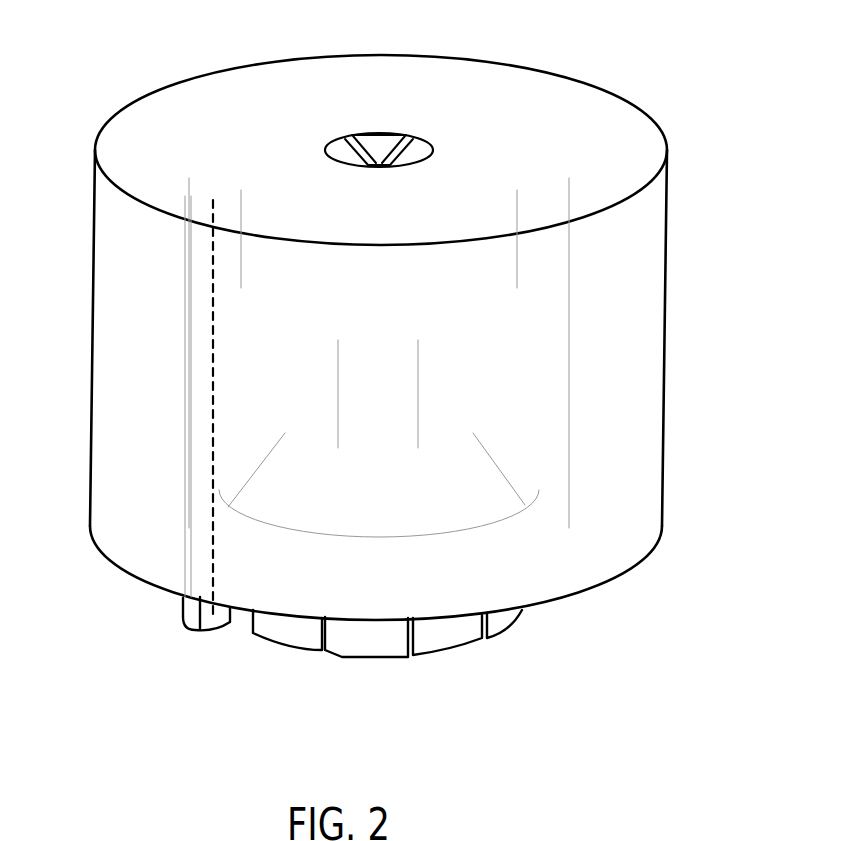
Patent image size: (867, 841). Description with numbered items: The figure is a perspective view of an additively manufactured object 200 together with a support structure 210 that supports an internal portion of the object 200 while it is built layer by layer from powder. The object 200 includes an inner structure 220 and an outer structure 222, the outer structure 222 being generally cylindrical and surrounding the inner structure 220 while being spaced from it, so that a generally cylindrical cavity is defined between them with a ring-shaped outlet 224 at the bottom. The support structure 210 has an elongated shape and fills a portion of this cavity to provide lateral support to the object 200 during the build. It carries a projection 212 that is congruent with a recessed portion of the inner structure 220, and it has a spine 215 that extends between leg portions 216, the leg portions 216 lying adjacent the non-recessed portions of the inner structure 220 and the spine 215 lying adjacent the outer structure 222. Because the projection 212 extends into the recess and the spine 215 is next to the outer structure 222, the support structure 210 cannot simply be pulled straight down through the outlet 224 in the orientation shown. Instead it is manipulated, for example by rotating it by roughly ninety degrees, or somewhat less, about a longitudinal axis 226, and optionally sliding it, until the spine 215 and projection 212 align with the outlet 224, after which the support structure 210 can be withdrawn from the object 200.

The object 200 is at (693, 168).
The support structure 210 is at (197, 519).
The projection 212 is at (238, 427).
The spine 215 is at (200, 463).
The leg portions 216 is at (228, 200).
The inner structure 220 is at (450, 400).
The outer structure 222 is at (648, 276).
The outlet 224 is at (525, 532).
The longitudinal axis 226 is at (213, 387).